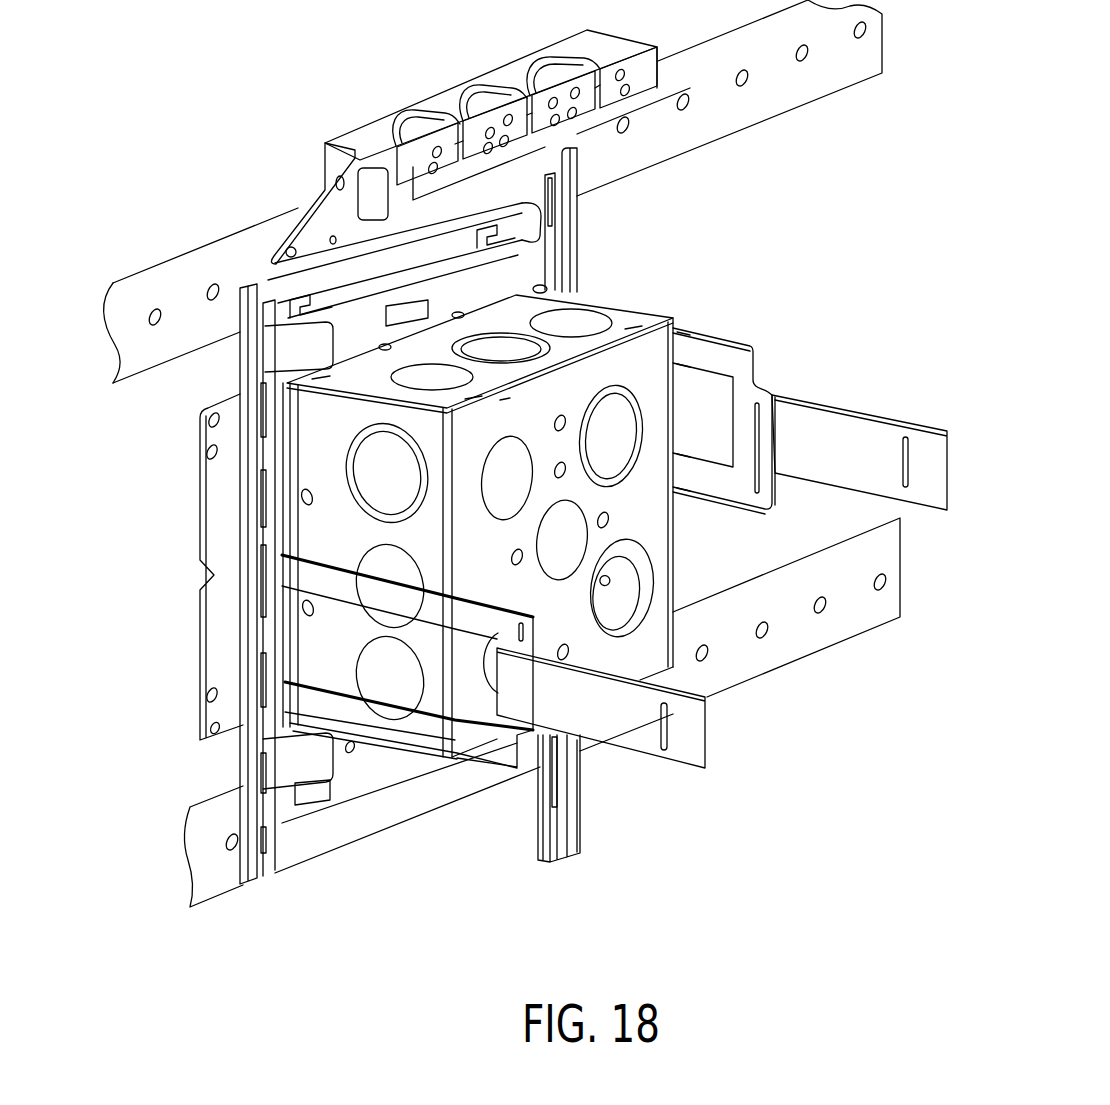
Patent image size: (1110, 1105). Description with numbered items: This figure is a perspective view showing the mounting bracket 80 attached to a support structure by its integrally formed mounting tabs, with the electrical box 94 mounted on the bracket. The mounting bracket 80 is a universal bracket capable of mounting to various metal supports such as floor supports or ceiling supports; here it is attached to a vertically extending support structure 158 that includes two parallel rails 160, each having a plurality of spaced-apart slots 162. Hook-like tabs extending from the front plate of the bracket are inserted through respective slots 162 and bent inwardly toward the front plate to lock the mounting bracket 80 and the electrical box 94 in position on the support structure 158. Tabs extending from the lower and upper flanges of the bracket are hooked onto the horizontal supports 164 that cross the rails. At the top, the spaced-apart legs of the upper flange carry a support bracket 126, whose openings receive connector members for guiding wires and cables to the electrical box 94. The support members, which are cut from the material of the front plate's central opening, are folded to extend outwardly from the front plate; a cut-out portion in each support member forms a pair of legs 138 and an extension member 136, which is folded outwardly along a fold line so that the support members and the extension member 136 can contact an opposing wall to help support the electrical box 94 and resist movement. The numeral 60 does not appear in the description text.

The mounting bracket 60 is at (579, 237).
The mounting bracket 80 is at (732, 286).
The electrical box 94 is at (630, 300).
The support bracket 126 is at (323, 142).
The extension member 136 is at (866, 410).
The legs 138 is at (741, 358).
The support structure 158 is at (592, 812).
The rails 160 is at (250, 348).
The slots 162 is at (551, 190).
The horizontal supports 164 is at (771, 106).